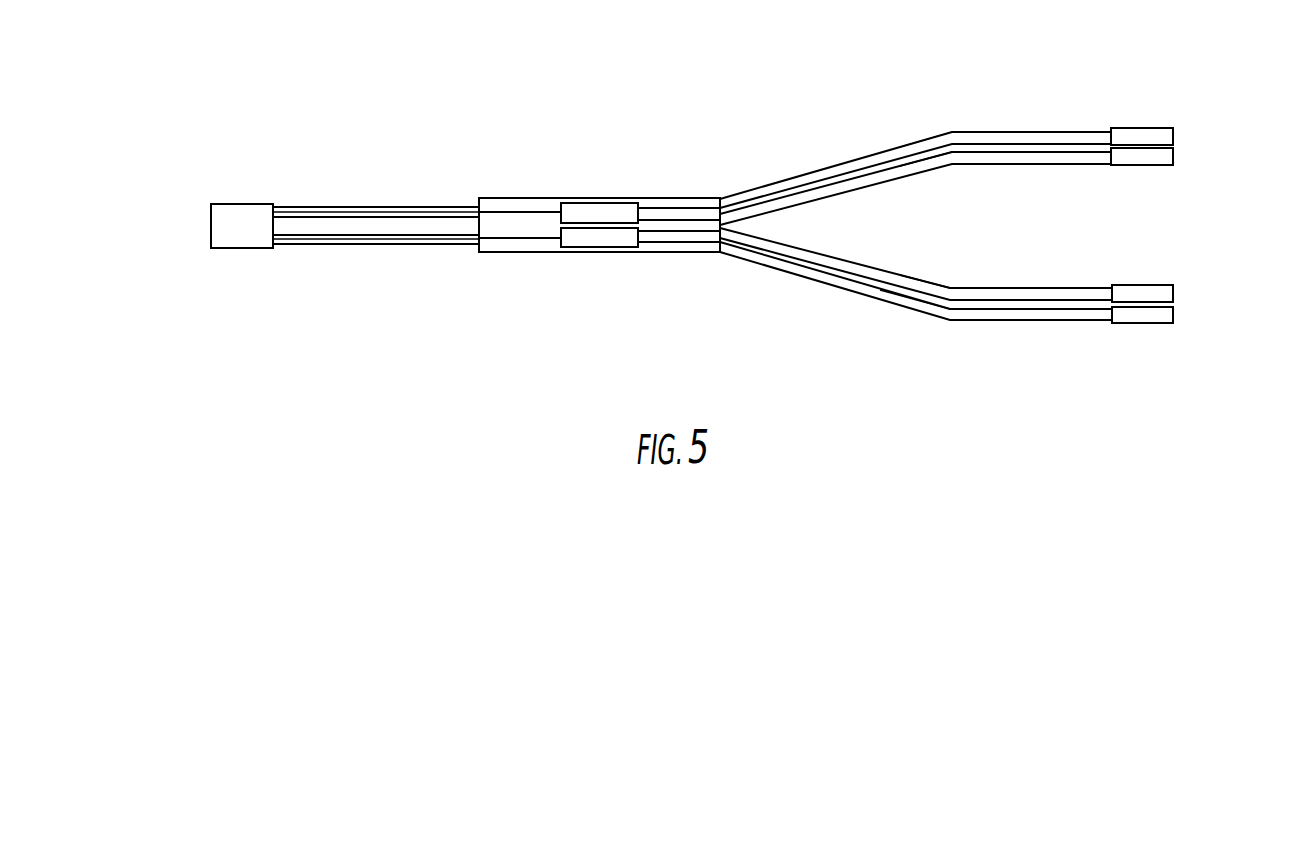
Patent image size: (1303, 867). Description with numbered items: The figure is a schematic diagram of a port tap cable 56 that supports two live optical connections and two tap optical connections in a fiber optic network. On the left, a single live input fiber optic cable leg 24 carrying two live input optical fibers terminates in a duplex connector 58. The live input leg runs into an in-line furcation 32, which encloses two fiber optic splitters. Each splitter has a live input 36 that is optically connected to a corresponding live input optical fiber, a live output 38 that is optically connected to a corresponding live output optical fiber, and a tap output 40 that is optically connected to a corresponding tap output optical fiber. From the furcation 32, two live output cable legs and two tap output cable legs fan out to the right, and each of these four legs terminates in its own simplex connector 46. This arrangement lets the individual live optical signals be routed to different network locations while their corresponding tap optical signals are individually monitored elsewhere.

The port tap cable 56 is at (631, 108).
The duplex connector 58 is at (211, 216).
The live input fiber optic cable leg 24 is at (340, 207).
The furcation 32 is at (687, 198).
The live input 36 is at (558, 212).
The live output 38 is at (638, 206).
The tap output 40 is at (640, 220).
The simplex connector 46 is at (1173, 137).